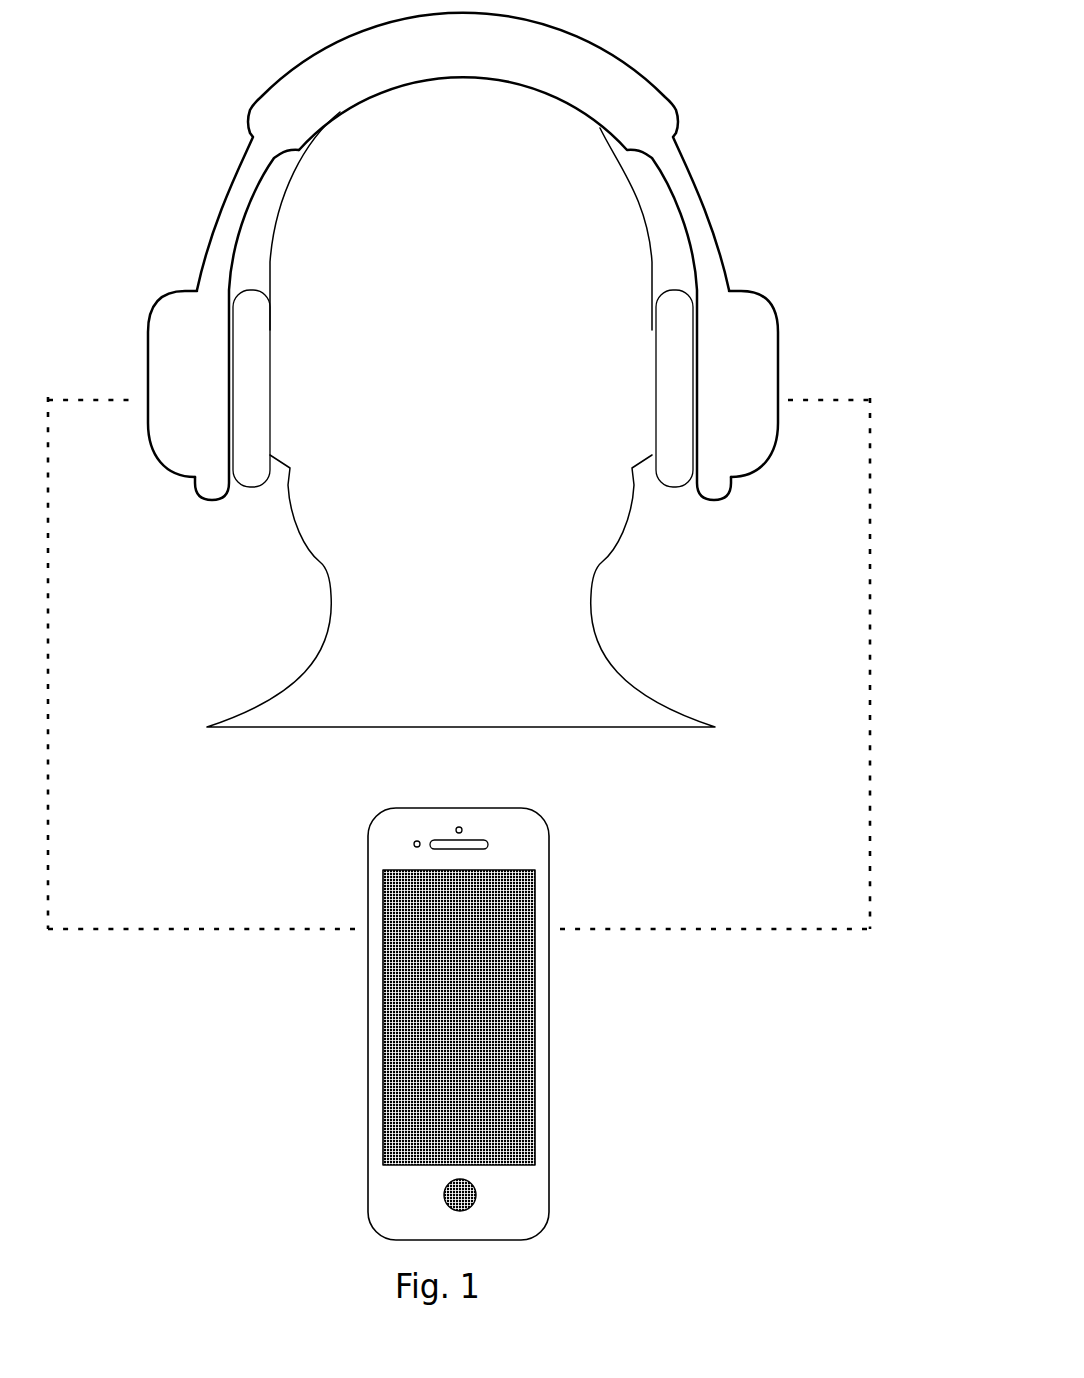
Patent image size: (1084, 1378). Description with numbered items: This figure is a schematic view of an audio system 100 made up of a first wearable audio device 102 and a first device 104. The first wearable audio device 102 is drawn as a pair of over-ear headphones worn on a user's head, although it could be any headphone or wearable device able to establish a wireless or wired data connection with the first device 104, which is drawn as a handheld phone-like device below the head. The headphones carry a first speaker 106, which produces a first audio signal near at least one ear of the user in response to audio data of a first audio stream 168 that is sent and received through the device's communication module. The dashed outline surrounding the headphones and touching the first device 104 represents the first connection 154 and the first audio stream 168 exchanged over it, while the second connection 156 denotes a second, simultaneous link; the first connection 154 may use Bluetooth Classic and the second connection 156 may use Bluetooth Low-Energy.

The audio system 100 is at (500, 626).
The first wearable audio device 102 is at (185, 289).
The first device 104 is at (549, 850).
The first speaker 106 is at (702, 366).
The first connection 154 is at (500, 625).
The first audio stream 168 is at (822, 399).
The second connection 156 is at (82, 928).